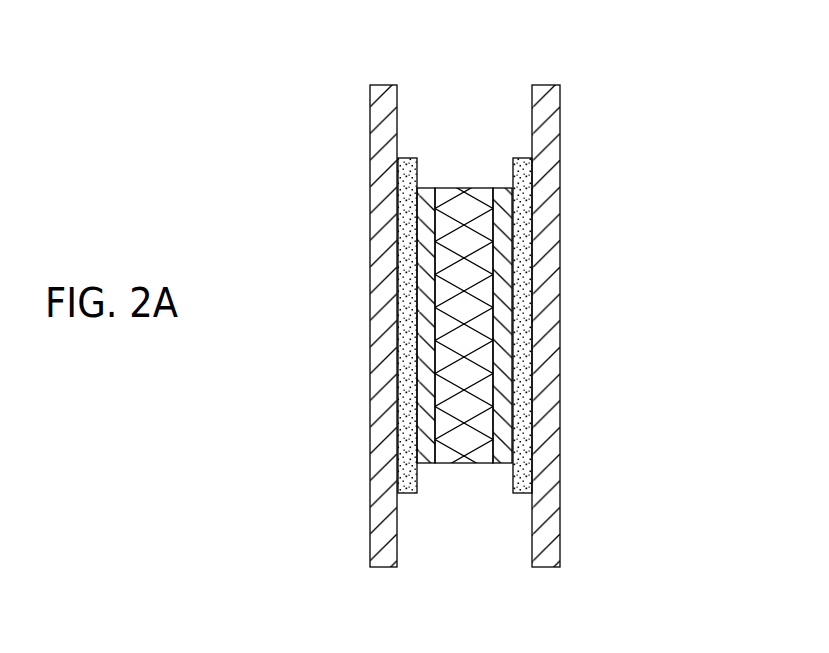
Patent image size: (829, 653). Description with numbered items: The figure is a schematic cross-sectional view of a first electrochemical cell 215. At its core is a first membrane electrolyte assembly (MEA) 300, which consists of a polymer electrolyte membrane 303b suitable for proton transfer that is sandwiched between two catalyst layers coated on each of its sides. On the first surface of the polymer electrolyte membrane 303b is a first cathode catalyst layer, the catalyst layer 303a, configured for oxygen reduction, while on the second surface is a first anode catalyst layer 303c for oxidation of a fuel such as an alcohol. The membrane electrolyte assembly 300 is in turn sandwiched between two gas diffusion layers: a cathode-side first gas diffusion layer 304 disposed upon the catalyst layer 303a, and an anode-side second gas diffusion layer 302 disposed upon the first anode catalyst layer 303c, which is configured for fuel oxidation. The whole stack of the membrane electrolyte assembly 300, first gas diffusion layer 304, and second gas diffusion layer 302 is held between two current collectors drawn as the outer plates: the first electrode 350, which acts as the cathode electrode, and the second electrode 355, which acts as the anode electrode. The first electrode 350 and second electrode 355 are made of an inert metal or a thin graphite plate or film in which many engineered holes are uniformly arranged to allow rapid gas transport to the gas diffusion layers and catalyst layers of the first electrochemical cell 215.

The first electrochemical cell 215 is at (628, 64).
The second electrode 355 is at (383, 327).
The first electrode 350 is at (543, 327).
The second gas diffusion layer 302 is at (407, 214).
The first gas diffusion layer 304 is at (522, 228).
The first membrane electrolyte assembly 300 is at (532, 583).
The catalyst layer 303a is at (503, 452).
The polymer electrolyte membrane 303b is at (469, 204).
The first anode catalyst layer 303c is at (427, 453).